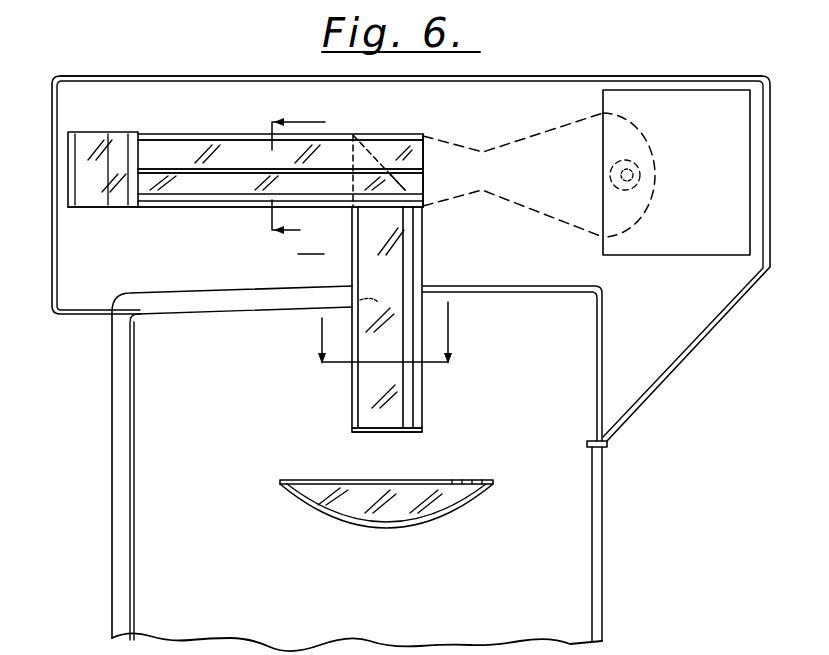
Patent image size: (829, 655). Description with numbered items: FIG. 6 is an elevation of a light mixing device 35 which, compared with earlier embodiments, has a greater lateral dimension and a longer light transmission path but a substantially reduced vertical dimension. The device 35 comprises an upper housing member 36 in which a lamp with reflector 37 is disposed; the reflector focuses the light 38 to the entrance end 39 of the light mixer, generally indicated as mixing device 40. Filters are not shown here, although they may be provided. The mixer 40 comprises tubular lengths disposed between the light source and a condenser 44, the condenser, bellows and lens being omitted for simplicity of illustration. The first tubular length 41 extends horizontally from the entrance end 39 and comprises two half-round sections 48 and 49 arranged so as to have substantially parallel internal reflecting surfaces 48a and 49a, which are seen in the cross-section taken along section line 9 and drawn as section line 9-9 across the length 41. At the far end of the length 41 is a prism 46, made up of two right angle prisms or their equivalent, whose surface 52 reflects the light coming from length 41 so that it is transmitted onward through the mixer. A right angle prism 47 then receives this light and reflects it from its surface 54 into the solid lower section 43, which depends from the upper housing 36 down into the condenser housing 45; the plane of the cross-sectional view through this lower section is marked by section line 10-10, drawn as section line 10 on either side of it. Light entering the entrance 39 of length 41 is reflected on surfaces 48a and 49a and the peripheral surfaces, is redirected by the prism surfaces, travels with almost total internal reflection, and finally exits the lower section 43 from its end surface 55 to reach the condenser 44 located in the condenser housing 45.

The section line 9- 9 is at (298, 177).
The section line 10- 10 is at (389, 333).
The device 35 is at (558, 73).
The upper housing member 36 is at (182, 76).
The lamp with reflector 37 is at (628, 121).
The light 38 is at (487, 150).
The entrance end 39 is at (425, 160).
The mixing device 40 is at (190, 217).
The tubular length 41 is at (245, 130).
The lower section 43 is at (400, 253).
The condenser 44 is at (312, 492).
The condenser housing 45 is at (128, 482).
The prism 46 is at (110, 216).
The prism 47 is at (386, 150).
The half-round section 48 is at (193, 148).
The internal reflecting surface 48a is at (162, 170).
The half-round section 49 is at (235, 203).
The internal reflecting surface 49a is at (178, 174).
The surface 52 is at (78, 172).
The surface 54 is at (412, 190).
The end surface 55 is at (365, 433).